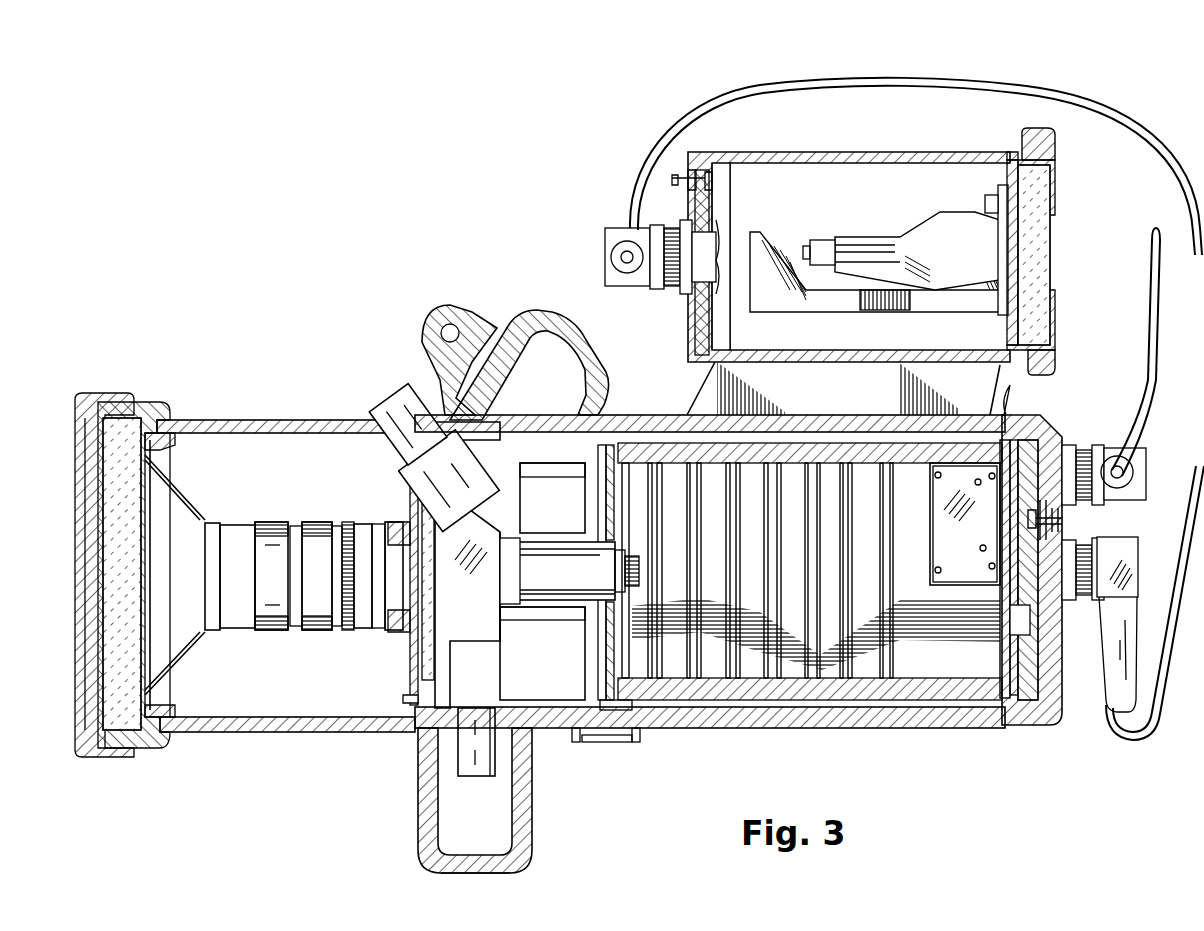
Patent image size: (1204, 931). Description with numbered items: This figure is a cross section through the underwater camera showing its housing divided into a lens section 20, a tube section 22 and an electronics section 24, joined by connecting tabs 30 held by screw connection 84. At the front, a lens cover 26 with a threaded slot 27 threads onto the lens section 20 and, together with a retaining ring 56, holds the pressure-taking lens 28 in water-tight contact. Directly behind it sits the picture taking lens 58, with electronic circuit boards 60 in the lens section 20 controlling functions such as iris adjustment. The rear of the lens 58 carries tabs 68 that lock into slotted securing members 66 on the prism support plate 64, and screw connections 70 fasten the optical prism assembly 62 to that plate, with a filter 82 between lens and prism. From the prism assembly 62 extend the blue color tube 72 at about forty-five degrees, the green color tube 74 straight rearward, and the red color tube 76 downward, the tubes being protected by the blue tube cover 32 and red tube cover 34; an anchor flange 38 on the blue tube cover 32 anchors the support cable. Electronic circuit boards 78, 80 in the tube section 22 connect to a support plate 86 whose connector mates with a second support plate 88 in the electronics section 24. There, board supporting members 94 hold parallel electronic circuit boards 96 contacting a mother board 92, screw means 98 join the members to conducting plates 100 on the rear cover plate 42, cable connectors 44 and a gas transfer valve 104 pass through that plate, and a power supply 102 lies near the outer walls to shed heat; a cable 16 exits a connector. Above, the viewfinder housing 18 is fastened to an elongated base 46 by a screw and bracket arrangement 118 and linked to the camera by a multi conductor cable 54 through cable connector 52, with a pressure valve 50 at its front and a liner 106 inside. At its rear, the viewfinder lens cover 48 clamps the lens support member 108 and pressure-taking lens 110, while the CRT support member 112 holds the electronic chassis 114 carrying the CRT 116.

The cable 16 is at (1150, 398).
The viewfinder housing 18 is at (816, 116).
The lens section 20 is at (232, 420).
The tube section 22 is at (535, 730).
The electronics section 24 is at (372, 418).
The lens cover 26 is at (152, 402).
The threaded slot 27 is at (172, 462).
The pressure-taking lens 28 is at (110, 636).
The connecting tabs 30 is at (393, 415).
The blue tube cover 32 is at (552, 310).
The red tube cover 34 is at (525, 866).
The anchor flange 38 is at (448, 305).
The rear cover plate 42 is at (1058, 712).
The cable connectors 44 is at (1070, 445).
The elongated base 46 is at (842, 387).
The viewfinder lens cover 48 is at (1035, 128).
The pressure valve 50 is at (680, 178).
The cable connector 52 is at (680, 228).
The multi conductor cable 54 is at (725, 92).
The retaining ring 56 is at (100, 400).
The picture taking lens 58 is at (190, 640).
The electronic circuit boards 60 is at (298, 433).
The optical prism assembly 62 is at (493, 625).
The prism support plate 64 is at (410, 465).
The slotted securing members 66 is at (405, 515).
The tabs 68 is at (388, 545).
The screw connections 70 is at (428, 516).
The blue color tube 72 is at (498, 490).
The green color tube 74 is at (550, 578).
The red color tube 76 is at (496, 690).
The electronic circuit board 78 is at (567, 494).
The electronic circuit board 80 is at (565, 698).
The filter 82 is at (432, 590).
The screw connection 84 is at (577, 742).
The support plate 86 is at (598, 498).
The second support plate 88 is at (606, 518).
The mother board 92 is at (718, 660).
The board supporting members 94 is at (838, 443).
The electronic circuit boards 96 is at (648, 463).
The screw means 98 is at (1000, 440).
The conducting plates 100 is at (998, 462).
The power supply 102 is at (972, 553).
The gas transfer valve 104 is at (1062, 520).
The wall liner 106 is at (692, 303).
The lens support member 108 is at (1040, 185).
The pressure-taking lens 110 is at (1052, 228).
The CRT support member 112 is at (1000, 190).
The electronic chassis 114 is at (947, 292).
The CRT 116 is at (910, 220).
The screw and bracket arrangement 118 is at (1012, 410).